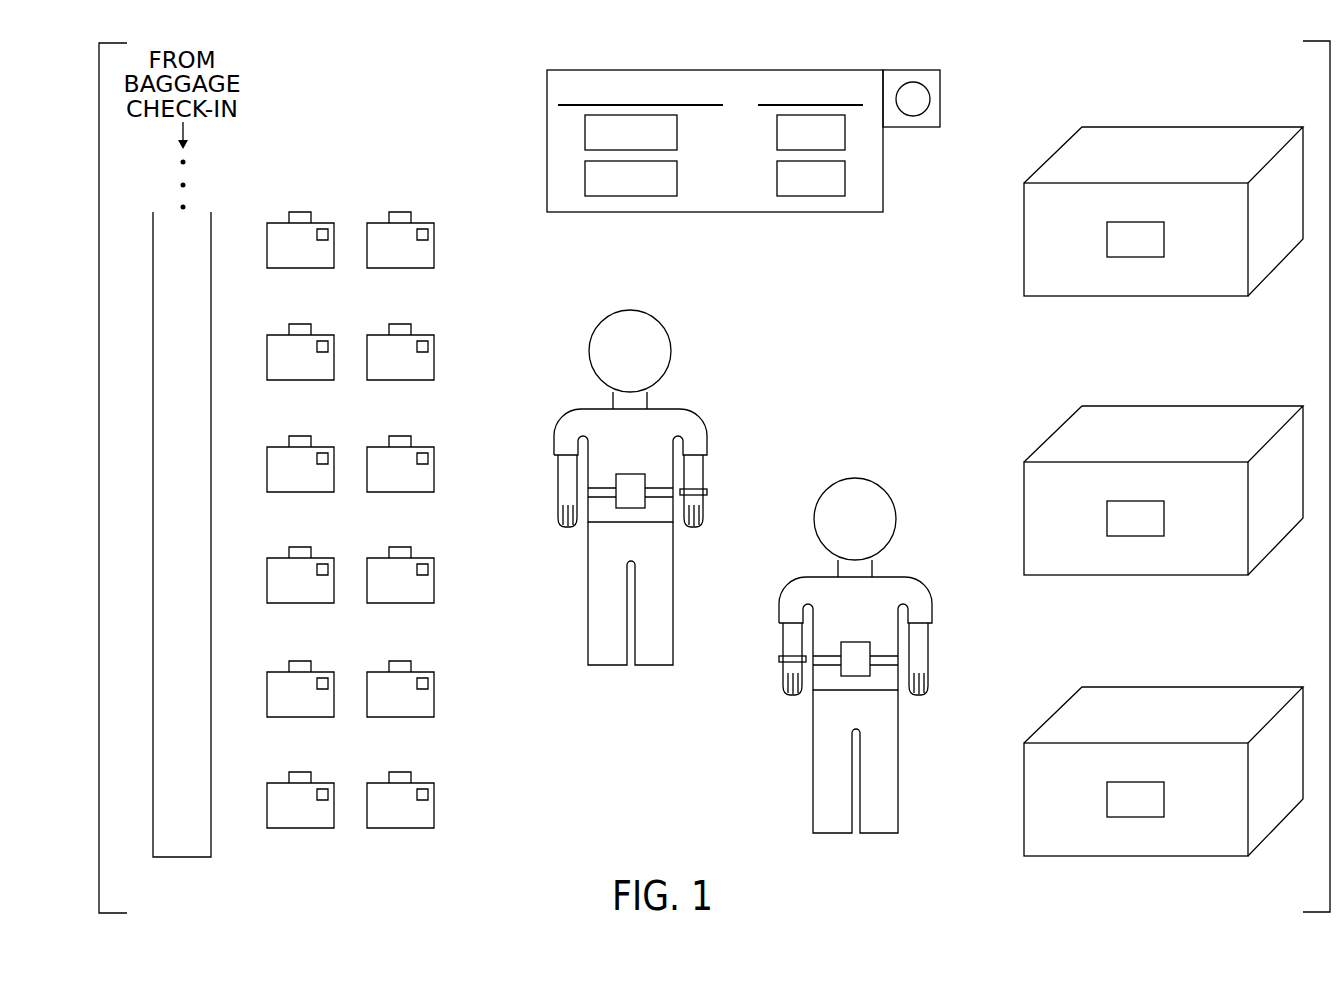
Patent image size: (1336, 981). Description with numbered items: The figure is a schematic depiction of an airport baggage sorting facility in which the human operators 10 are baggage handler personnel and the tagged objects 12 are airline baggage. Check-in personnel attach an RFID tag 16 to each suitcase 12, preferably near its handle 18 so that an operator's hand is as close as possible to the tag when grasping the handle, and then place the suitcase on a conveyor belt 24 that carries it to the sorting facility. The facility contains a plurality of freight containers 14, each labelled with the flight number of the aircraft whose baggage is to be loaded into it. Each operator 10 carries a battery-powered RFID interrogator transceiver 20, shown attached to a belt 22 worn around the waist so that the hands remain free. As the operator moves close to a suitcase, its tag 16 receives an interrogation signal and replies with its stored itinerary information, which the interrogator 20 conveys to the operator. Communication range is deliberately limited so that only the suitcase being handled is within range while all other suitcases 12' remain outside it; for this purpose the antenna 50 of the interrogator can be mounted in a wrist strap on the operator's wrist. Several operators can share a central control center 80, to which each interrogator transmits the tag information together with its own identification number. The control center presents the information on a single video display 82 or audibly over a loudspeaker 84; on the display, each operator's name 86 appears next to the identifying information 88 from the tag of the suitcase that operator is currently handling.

The human operator 10 is at (603, 307).
The tagged object 12 is at (420, 224).
The other suitcases 12' is at (359, 536).
The freight container 14 is at (1222, 127).
The RFID tag 16 is at (428, 234).
The handle 18 is at (400, 212).
The RFID interrogator transceiver 20 is at (635, 502).
The belt 22 is at (602, 490).
The conveyor belt 24 is at (183, 847).
The antenna 50 is at (707, 491).
The central control center 80 is at (711, 143).
The video display 82 is at (735, 70).
The loudspeaker 84 is at (917, 127).
The operator's name 86 is at (625, 196).
The identifying information 88 is at (817, 196).